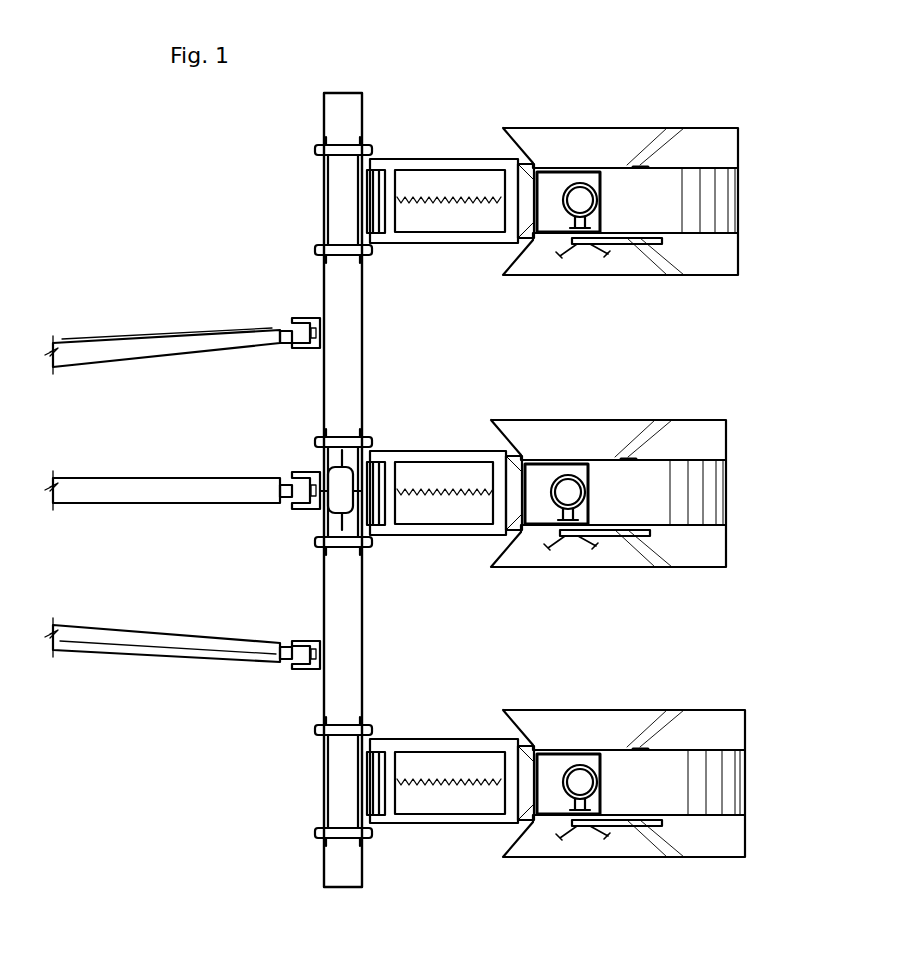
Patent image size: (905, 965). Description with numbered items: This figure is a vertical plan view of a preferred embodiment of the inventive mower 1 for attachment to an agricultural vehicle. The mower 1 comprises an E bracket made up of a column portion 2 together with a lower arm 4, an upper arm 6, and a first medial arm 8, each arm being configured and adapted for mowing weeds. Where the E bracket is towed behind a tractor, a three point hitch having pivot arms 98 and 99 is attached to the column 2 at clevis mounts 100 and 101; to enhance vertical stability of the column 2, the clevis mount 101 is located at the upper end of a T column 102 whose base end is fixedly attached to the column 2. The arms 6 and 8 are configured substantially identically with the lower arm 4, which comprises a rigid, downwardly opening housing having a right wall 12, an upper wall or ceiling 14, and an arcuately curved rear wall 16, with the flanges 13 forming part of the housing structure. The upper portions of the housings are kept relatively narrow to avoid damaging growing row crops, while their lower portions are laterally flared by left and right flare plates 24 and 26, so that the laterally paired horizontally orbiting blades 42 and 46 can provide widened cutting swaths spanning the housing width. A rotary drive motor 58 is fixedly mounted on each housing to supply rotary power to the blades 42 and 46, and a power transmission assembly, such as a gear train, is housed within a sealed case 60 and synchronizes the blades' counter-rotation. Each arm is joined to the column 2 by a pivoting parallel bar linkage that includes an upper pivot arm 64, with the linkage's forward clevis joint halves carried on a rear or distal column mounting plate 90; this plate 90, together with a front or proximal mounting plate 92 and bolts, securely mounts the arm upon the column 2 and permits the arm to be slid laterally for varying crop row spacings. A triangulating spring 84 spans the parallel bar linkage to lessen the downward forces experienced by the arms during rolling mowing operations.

The mower 1 is at (498, 76).
The column portion 2 is at (353, 338).
The lower arm 4 is at (679, 776).
The upper arm 6 is at (684, 156).
The first medial arm 8 is at (670, 446).
The right wall 12 is at (672, 748).
The cushion flange 13 is at (728, 728).
The upper wall or ceiling 14 is at (663, 798).
The arcuately curved rear wall 16 is at (723, 778).
The left flare plate 24 is at (590, 840).
The right flare plate 26 is at (593, 723).
The horizontally orbiting blade 42 is at (507, 768).
The horizontally orbiting blade 46 is at (518, 798).
The rotary drive motor 58 is at (578, 772).
The sealed case 60 is at (538, 735).
The upper pivot arm 64 is at (455, 822).
The triangulating spring 84 is at (470, 785).
The rear or distal column mounting plate 90 is at (362, 768).
The front or proximal mounting plate 92 is at (318, 782).
The pivot arm 98 is at (198, 340).
The pivot arm 99 is at (168, 488).
The clevis mount 100 is at (306, 320).
The clevis mount 101 is at (303, 494).
The T column 102 is at (338, 488).